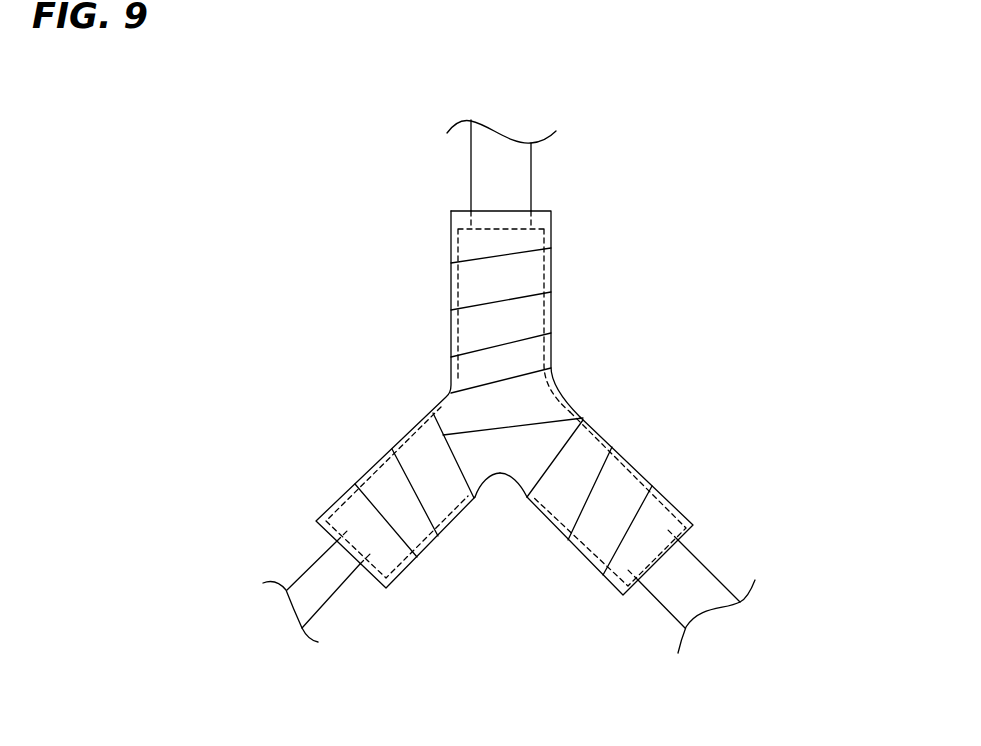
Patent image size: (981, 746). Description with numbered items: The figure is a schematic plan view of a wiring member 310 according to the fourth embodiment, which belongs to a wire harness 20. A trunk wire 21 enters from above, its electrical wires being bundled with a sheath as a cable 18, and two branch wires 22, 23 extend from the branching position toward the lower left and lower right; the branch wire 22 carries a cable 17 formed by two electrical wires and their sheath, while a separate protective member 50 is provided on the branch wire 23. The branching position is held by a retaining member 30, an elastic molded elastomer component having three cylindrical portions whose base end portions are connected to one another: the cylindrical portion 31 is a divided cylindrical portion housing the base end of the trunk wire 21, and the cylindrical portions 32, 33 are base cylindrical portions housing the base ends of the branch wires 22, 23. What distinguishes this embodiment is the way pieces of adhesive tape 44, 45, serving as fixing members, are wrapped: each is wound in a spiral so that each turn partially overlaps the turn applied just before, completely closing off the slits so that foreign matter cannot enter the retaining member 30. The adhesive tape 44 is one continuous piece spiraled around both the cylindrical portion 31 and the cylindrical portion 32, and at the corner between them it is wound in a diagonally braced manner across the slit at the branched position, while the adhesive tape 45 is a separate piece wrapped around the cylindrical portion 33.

The wiring member 310 is at (430, 70).
The wire harness 20 is at (617, 4).
The cable 18 is at (522, 170).
The trunk wire 21 is at (462, 176).
The cable 17 is at (318, 605).
The branch wire 22 is at (287, 578).
The protective member 50 is at (673, 607).
The branch wire 23 is at (715, 561).
The adhesive tape 44 is at (551, 288).
The adhesive tape 45 is at (615, 457).
The cylindrical portion 31 is at (470, 294).
The retaining member 30 is at (500, 485).
The cylindrical portion 32 is at (477, 488).
The cylindrical portion 33 is at (529, 481).